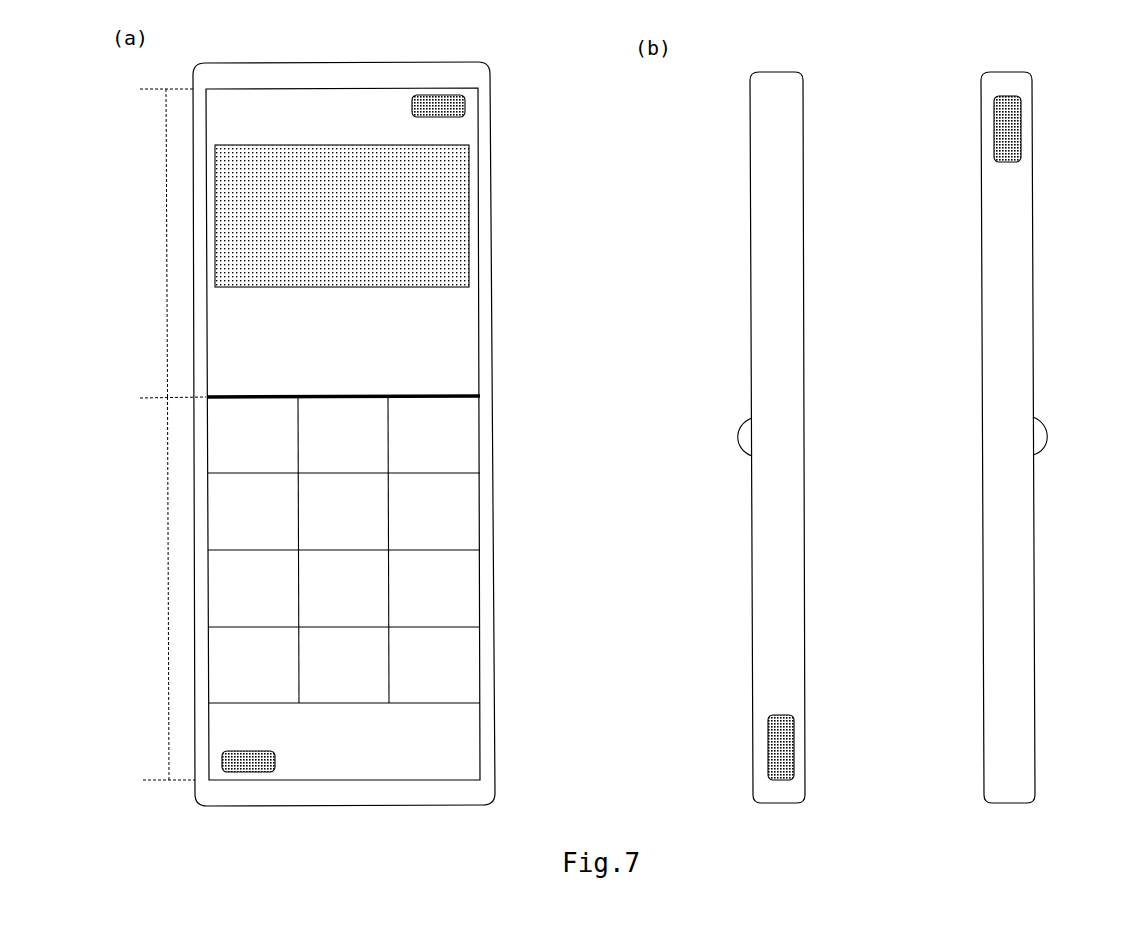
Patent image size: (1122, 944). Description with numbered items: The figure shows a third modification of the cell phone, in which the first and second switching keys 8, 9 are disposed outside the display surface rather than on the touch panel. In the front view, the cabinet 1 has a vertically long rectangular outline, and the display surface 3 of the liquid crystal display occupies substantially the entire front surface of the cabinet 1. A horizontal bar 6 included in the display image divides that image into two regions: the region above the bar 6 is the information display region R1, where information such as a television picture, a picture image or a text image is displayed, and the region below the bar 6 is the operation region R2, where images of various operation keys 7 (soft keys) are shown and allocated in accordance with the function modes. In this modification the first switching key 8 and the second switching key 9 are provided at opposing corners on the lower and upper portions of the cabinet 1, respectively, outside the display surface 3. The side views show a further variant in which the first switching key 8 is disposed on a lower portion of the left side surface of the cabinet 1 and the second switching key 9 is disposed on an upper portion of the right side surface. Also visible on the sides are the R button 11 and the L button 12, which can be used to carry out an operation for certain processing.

The cabinet 1 is at (490, 110).
The display surface 3 is at (335, 88).
The bar 6 is at (430, 392).
The operation keys 7 is at (223, 493).
The first switching key 8 is at (245, 773).
The second switching key 9 is at (447, 88).
The R button 11 is at (747, 423).
The L button 12 is at (1044, 430).
The information display region R1 is at (152, 243).
The operation region R2 is at (159, 588).